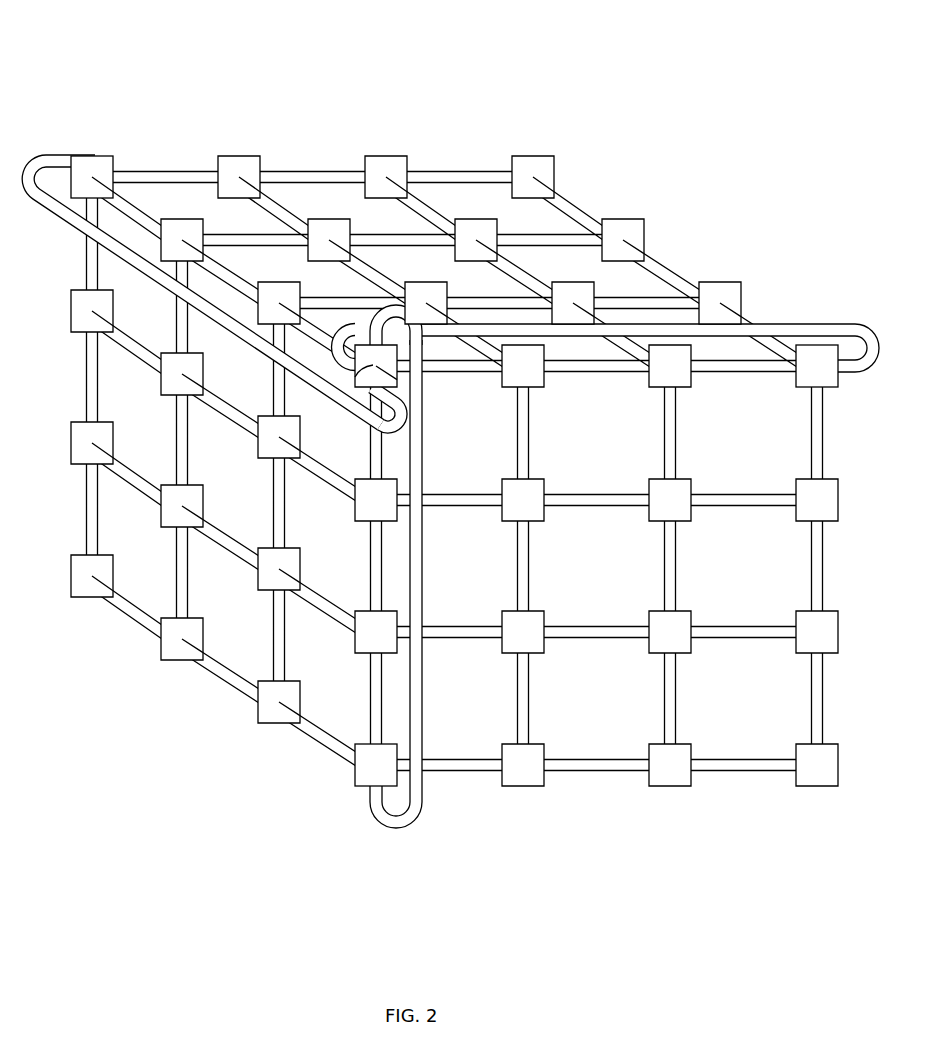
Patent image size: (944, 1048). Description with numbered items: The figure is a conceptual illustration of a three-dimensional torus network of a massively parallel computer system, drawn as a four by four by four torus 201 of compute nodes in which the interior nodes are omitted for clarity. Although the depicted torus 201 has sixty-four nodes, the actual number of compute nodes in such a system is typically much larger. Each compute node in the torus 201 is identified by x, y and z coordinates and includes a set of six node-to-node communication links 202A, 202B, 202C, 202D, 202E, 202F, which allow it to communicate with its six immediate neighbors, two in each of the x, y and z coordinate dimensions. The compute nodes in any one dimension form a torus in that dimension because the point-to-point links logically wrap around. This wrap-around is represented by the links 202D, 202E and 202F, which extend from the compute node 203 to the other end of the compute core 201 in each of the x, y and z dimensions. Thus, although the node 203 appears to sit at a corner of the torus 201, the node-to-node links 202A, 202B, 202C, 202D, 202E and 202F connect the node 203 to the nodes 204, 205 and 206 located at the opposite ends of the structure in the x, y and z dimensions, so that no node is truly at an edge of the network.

The torus 201 is at (600, 84).
The node-to-node communication link 202A is at (447, 372).
The node-to-node communication link 202B is at (382, 454).
The node-to-node communication link 202C is at (338, 330).
The node-to-node communication link 202D is at (841, 323).
The node-to-node communication link 202E is at (394, 826).
The node-to-node communication link 202F is at (40, 154).
The compute node 203 is at (336, 386).
The node 204 is at (95, 165).
The node 205 is at (826, 374).
The node 206 is at (366, 772).